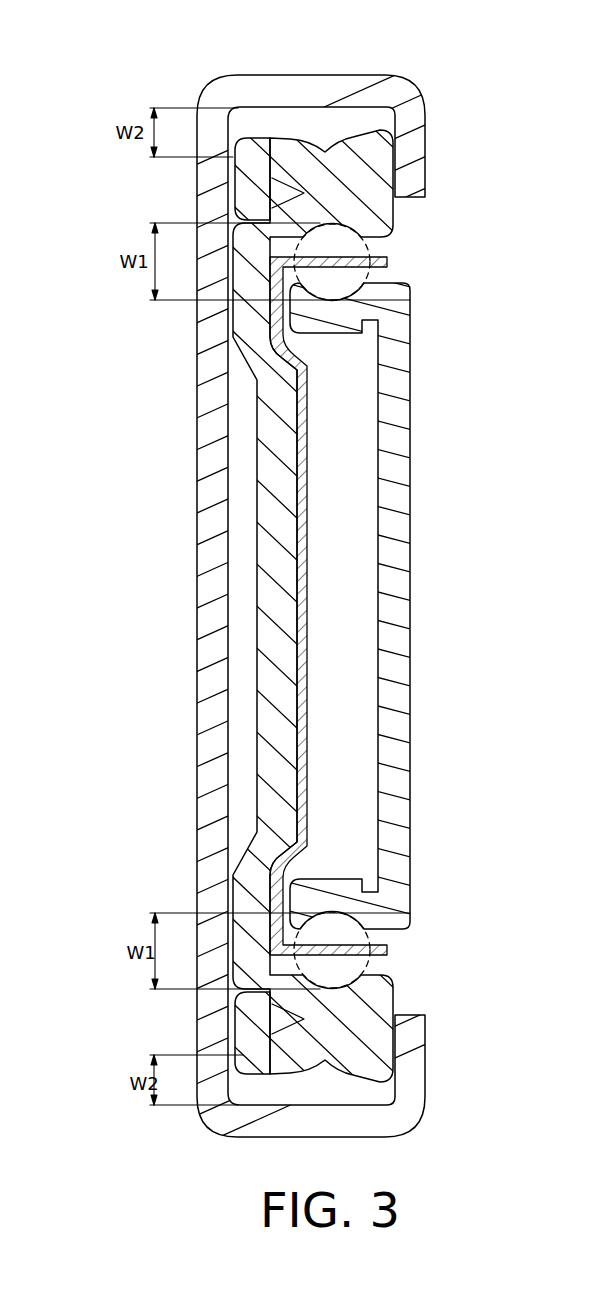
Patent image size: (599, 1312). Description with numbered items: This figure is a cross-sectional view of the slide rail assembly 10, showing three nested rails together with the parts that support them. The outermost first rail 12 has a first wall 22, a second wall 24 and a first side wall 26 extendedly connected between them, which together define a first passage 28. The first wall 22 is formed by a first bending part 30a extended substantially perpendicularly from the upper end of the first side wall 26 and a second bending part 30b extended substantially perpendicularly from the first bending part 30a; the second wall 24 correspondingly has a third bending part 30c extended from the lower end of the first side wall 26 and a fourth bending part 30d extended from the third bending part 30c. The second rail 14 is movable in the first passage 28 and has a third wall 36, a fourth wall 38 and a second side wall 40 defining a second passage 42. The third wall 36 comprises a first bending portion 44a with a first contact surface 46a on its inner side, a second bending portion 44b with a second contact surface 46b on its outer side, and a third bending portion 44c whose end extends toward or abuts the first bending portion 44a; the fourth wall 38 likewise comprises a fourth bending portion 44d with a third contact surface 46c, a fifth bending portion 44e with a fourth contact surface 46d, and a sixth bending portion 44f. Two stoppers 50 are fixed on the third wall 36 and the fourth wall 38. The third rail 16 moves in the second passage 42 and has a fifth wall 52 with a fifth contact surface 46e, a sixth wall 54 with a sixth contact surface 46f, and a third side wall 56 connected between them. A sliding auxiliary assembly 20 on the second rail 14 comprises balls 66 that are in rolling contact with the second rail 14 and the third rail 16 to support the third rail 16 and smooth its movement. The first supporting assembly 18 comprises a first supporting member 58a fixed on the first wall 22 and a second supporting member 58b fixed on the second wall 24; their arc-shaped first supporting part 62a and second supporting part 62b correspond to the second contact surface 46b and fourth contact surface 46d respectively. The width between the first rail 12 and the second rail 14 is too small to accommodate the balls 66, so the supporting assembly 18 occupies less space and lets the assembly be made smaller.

The slide rail assembly 10 is at (488, 86).
The first rail 12 is at (188, 489).
The second rail 14 is at (253, 557).
The third rail 16 is at (413, 484).
The first supporting assembly 18 is at (233, 107).
The sliding auxiliary assembly 20 is at (313, 450).
The first wall 22 is at (367, 42).
The second wall 24 is at (385, 1172).
The first side wall 26 is at (208, 617).
The first passage 28 is at (238, 690).
The first bending part 30a is at (330, 92).
The second bending part 30b is at (417, 137).
The third bending part 30c is at (357, 1122).
The fourth bending part 30d is at (427, 1090).
The third wall 36 is at (78, 158).
The fourth wall 38 is at (67, 995).
The second side wall 40 is at (283, 808).
The second passage 42 is at (318, 597).
The first bending portion 44a is at (305, 212).
The second bending portion 44b is at (340, 170).
The third bending portion 44c is at (252, 200).
The fourth bending portion 44d is at (305, 1002).
The fifth bending portion 44e is at (330, 1052).
The sixth bending portion 44f is at (245, 1023).
The first contact surface 46a is at (372, 247).
The second contact surface 46b is at (293, 128).
The third contact surface 46c is at (385, 960).
The fourth contact surface 46d is at (297, 1090).
The fifth contact surface 46e is at (365, 277).
The sixth contact surface 46f is at (373, 948).
The stopper 50 is at (383, 143).
The fifth wall 52 is at (368, 305).
The sixth wall 54 is at (347, 897).
The third side wall 56 is at (413, 655).
The first supporting member 58a is at (317, 153).
The second supporting member 58b is at (313, 1095).
The first supporting part 62a is at (337, 173).
The second supporting part 62b is at (340, 1057).
The balls 66 is at (377, 273).